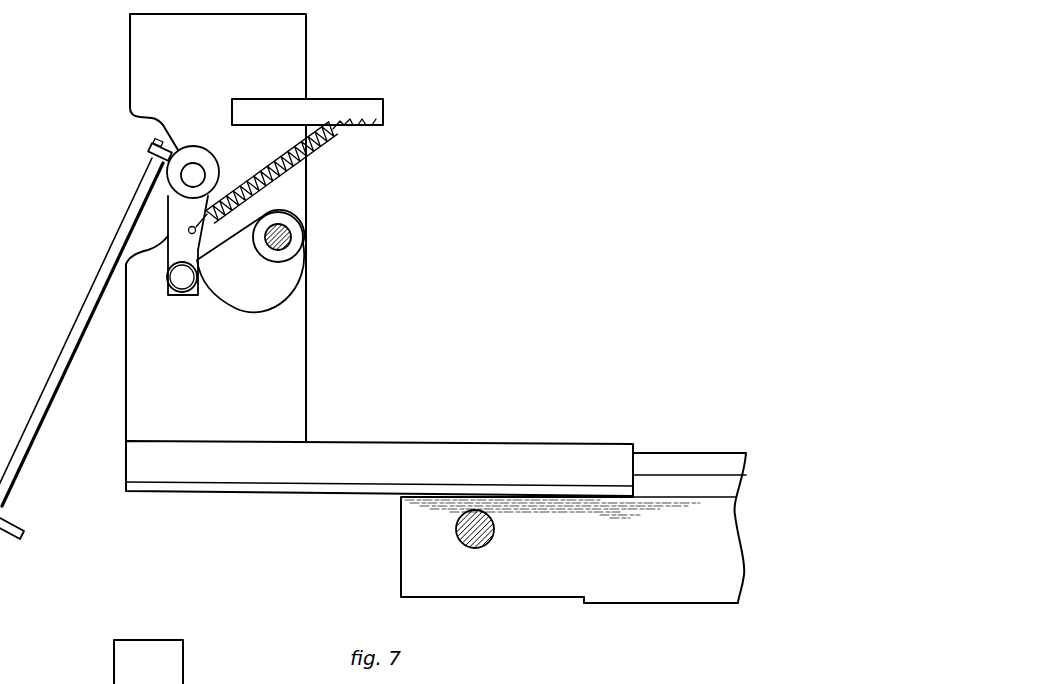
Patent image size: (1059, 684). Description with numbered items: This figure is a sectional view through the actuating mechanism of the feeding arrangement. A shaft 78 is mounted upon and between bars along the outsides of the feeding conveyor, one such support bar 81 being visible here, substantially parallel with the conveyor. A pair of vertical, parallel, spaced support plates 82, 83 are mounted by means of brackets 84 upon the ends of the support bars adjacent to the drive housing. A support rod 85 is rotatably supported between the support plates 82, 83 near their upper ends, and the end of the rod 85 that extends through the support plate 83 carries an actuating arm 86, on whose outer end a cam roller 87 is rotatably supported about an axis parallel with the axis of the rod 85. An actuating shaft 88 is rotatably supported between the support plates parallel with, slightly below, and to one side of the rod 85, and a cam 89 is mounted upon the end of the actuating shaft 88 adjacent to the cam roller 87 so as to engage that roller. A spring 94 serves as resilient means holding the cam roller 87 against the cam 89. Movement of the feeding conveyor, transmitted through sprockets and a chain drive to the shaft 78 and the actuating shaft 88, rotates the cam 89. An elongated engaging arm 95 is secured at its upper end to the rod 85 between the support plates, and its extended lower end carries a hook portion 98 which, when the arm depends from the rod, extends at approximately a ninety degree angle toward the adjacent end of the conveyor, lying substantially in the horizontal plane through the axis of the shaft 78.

The shaft 78 is at (488, 537).
The bar 81 is at (688, 487).
The support plate 82 is at (173, 662).
The support plate 83 is at (288, 58).
The bracket 84 is at (433, 455).
The support rod 85 is at (198, 170).
The actuating arm 86 is at (183, 207).
The cam roller 87 is at (183, 282).
The actuating shaft 88 is at (283, 237).
The cam 89 is at (278, 283).
The spring 94 is at (318, 150).
The arm 95 is at (25, 438).
The hook portion 98 is at (18, 527).